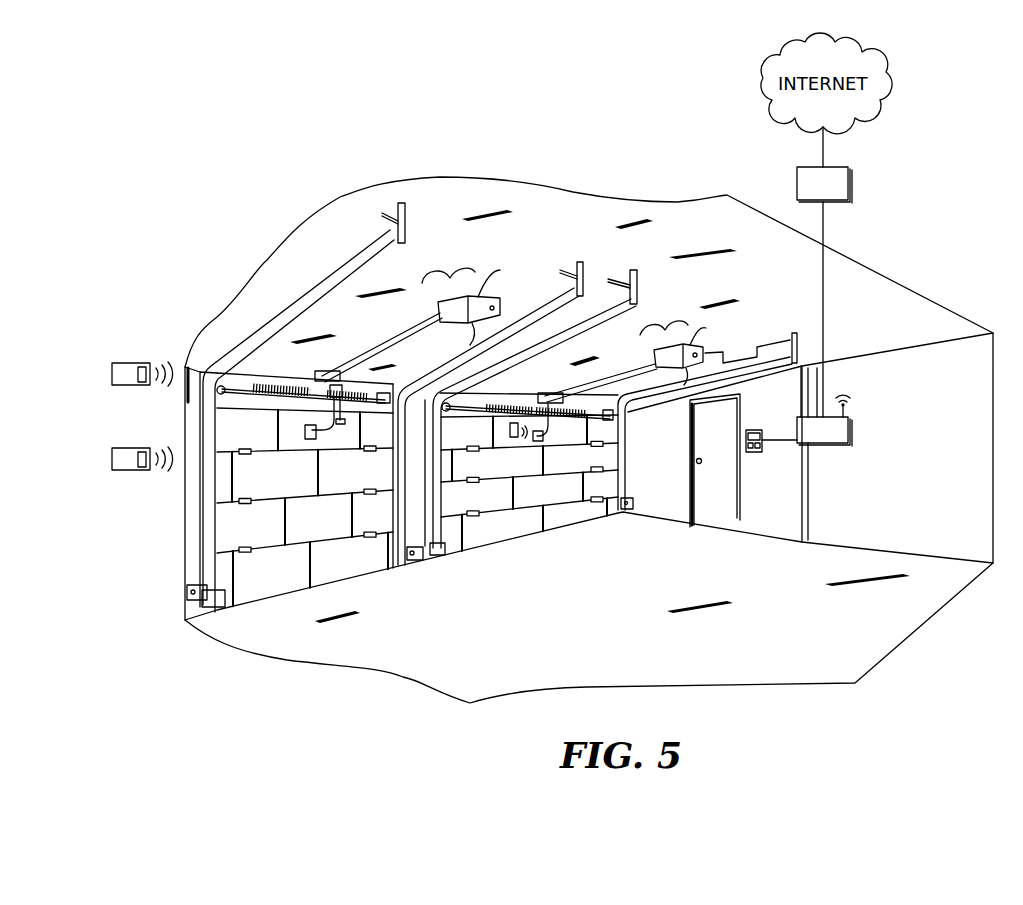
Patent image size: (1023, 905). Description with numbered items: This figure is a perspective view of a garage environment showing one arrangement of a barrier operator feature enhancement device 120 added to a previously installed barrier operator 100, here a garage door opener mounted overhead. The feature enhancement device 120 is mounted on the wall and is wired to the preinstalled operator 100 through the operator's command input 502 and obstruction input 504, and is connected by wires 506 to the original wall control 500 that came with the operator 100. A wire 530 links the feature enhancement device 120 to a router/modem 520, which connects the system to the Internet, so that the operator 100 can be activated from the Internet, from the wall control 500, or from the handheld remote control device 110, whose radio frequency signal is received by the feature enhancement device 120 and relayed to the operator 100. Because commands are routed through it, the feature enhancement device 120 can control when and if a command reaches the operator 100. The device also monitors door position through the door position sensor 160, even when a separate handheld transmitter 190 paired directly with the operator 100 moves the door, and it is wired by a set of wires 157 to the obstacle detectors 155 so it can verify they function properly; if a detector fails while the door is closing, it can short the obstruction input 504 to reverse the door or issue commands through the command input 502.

The barrier operator 100 is at (656, 354).
The remote control device 110 is at (115, 448).
The barrier operator feature enhancement device 120 is at (849, 427).
The obstacle detectors 155 is at (446, 553).
The set of wires 157 is at (818, 378).
The door position sensor 160 is at (513, 438).
The handheld transmitter 190 is at (115, 363).
The wall control 500 is at (750, 453).
The command input 502 is at (800, 388).
The obstruction input 504 is at (800, 410).
The wires 506 is at (775, 441).
The router/modem 520 is at (849, 185).
The wire 530 is at (824, 348).